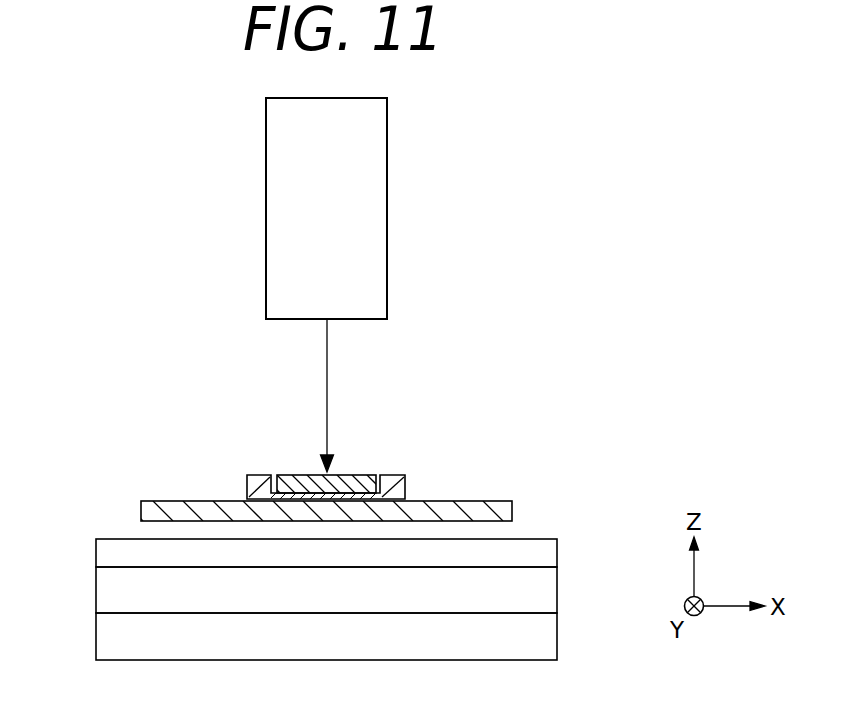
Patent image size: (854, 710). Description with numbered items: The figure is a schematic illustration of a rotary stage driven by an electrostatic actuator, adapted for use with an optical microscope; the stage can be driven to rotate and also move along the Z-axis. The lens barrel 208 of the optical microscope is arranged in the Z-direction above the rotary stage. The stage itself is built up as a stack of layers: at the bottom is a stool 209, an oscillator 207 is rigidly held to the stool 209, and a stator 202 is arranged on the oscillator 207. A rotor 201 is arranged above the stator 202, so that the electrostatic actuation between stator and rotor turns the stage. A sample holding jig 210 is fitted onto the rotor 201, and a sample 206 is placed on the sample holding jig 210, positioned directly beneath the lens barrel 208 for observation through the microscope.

The lens barrel 208 is at (388, 188).
The sample 206 is at (360, 475).
The sample holding jig 210 is at (407, 486).
The rotor 201 is at (512, 510).
The stator 202 is at (548, 552).
The oscillator 207 is at (548, 593).
The stool 209 is at (548, 640).